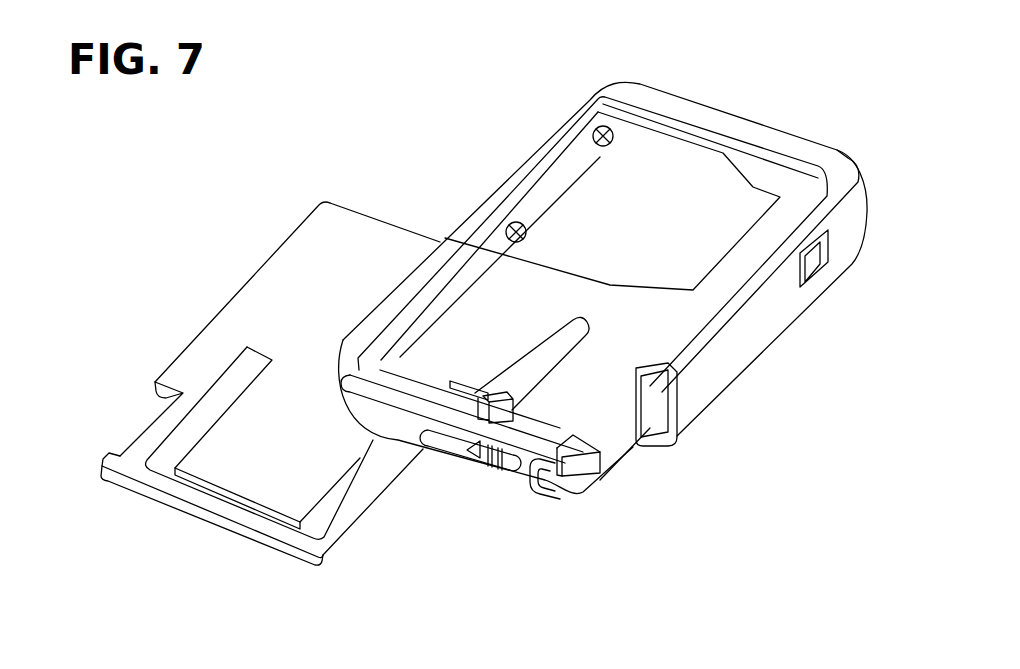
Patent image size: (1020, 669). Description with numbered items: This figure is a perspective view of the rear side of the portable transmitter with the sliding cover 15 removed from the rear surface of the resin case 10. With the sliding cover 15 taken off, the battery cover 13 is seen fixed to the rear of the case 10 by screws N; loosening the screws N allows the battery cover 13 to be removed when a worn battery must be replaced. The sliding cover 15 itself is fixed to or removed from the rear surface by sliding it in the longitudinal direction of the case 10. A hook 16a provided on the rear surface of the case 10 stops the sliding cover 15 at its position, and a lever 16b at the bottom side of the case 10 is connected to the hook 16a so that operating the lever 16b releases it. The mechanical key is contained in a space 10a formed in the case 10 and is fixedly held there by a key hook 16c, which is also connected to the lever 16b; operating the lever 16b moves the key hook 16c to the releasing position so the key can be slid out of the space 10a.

The case 10 is at (706, 415).
The space 10a is at (652, 410).
The battery cover 13 is at (580, 180).
The sliding cover 15 is at (243, 312).
The hook 16a is at (483, 413).
The lever 16b is at (497, 463).
The key hook 16c is at (583, 468).
The screws N is at (597, 124).